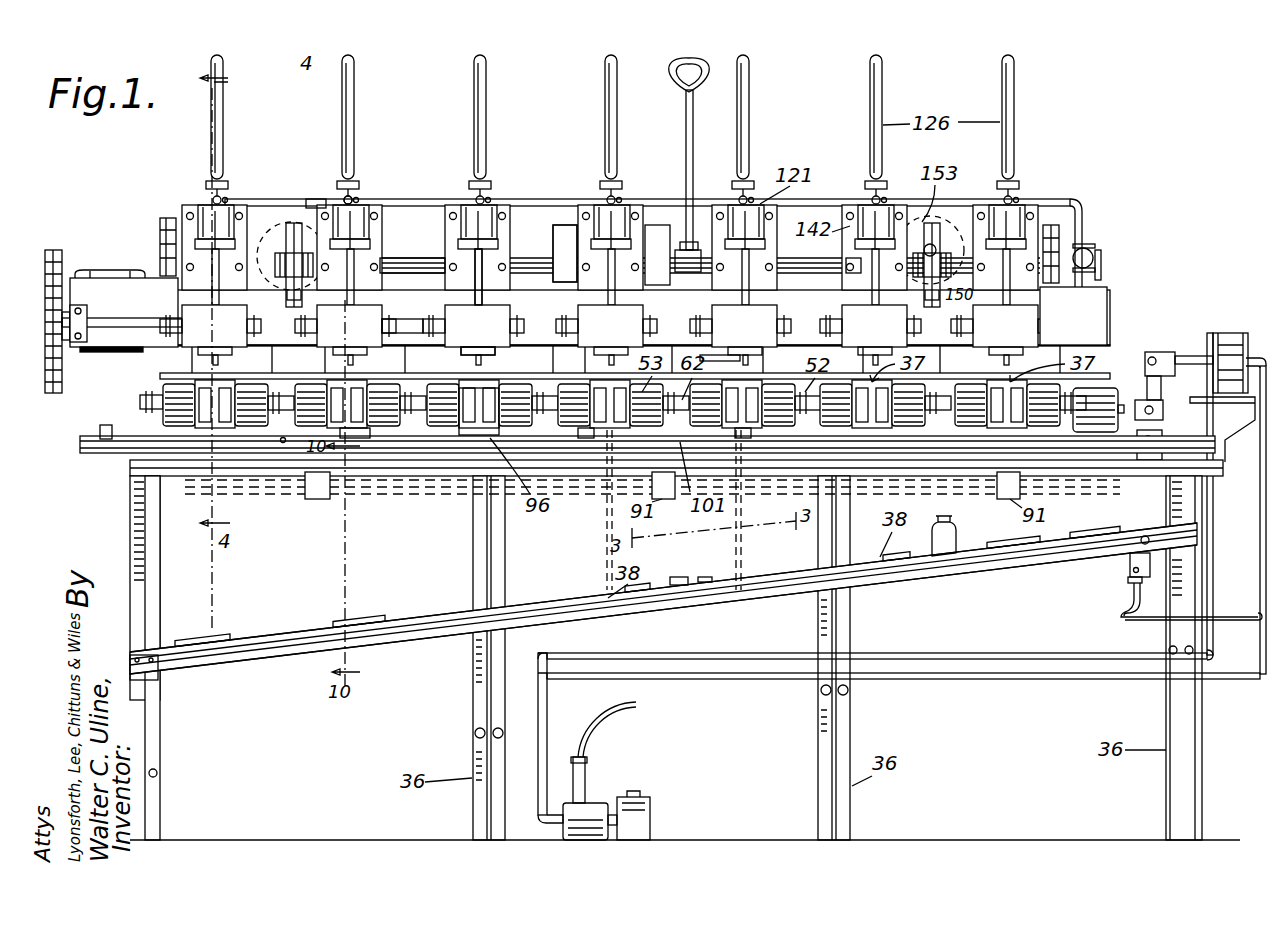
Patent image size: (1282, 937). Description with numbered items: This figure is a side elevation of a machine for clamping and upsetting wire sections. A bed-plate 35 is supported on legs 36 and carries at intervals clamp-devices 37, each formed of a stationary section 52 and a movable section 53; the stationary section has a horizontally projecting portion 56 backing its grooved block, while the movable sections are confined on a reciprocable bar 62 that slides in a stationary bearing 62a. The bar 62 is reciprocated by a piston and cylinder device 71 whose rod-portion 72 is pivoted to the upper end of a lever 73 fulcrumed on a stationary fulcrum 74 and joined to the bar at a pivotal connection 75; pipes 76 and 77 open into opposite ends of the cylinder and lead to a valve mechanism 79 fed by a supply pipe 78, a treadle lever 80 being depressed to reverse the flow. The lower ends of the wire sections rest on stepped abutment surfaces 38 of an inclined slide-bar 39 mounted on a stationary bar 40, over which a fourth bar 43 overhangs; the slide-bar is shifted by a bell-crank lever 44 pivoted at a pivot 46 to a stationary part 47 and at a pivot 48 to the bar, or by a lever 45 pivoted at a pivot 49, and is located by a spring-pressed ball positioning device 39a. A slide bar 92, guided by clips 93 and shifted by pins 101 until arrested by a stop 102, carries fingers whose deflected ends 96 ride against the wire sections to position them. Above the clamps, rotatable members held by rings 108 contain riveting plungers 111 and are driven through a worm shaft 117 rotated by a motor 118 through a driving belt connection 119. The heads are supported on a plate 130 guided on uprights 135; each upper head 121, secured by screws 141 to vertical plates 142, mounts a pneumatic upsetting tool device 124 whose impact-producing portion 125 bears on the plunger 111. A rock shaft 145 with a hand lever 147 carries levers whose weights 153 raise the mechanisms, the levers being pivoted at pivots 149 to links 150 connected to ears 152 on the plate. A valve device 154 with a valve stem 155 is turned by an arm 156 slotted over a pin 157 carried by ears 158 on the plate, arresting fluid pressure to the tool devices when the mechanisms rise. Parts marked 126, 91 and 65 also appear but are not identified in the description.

The driving belt connection 119 is at (75, 226).
The motor 118 is at (113, 270).
The plate 130 is at (122, 315).
The weights 153 is at (291, 222).
The head 121 is at (360, 198).
The screws 141 is at (372, 208).
The vertical plates 142 is at (497, 225).
The handle 126 is at (605, 110).
The hand lever 147 is at (686, 116).
The pivot 149 is at (950, 238).
The valve device 154 is at (1100, 244).
The valve stem 155 is at (1108, 254).
The arm 156 is at (1110, 262).
The pin 157 is at (1110, 272).
The ears 158 is at (1110, 282).
The stationary bearing 62a is at (1097, 392).
The piston and cylinder device 71 is at (1230, 334).
The rod-portion 72 is at (1185, 356).
The lever 73 is at (1152, 352).
The pivotal connection 75 is at (1152, 412).
The fulcrum 74 is at (1152, 443).
The rock shaft 145 is at (418, 252).
The uprights 135 is at (565, 240).
The upsetting tool device 124 is at (852, 258).
The impact-producing portion 125 is at (610, 300).
The shaft 117 is at (392, 322).
The links 150 is at (282, 265).
The ears 152 is at (305, 300).
The ring 108 is at (458, 349).
The riveting plunger 111 is at (742, 358).
The clamp-devices 37 is at (490, 375).
The movable section 53 is at (400, 390).
The reciprocable bar 62 is at (147, 397).
The stationary section 52 is at (305, 388).
The stop 102 is at (106, 425).
The pins 101 is at (128, 434).
The clips 93 is at (283, 444).
The bracket 91 is at (316, 499).
The deflected finger end 96 is at (355, 438).
The horizontally projecting portion 56 is at (470, 412).
The slide bar 92 is at (583, 438).
The rod 65 is at (742, 438).
The abutment surfaces 38 is at (358, 622).
The positioning device 39a is at (950, 534).
The bed-plate 35 is at (1135, 477).
The pivot 48 is at (1148, 530).
The pipe 77 is at (1213, 494).
The pipe 76 is at (1260, 520).
The stationary part 47 is at (1128, 566).
The pivot 46 is at (1128, 583).
The lever 44 is at (1125, 622).
The fourth bar 43 is at (545, 612).
The pivot 49 is at (680, 576).
The lever 45 is at (706, 576).
The stationary bar 40 is at (285, 663).
The slide-bar 39 is at (432, 642).
The legs 36 is at (160, 800).
The pipe 78 is at (588, 768).
The valve mechanism 79 is at (597, 802).
The treadle lever 80 is at (645, 796).